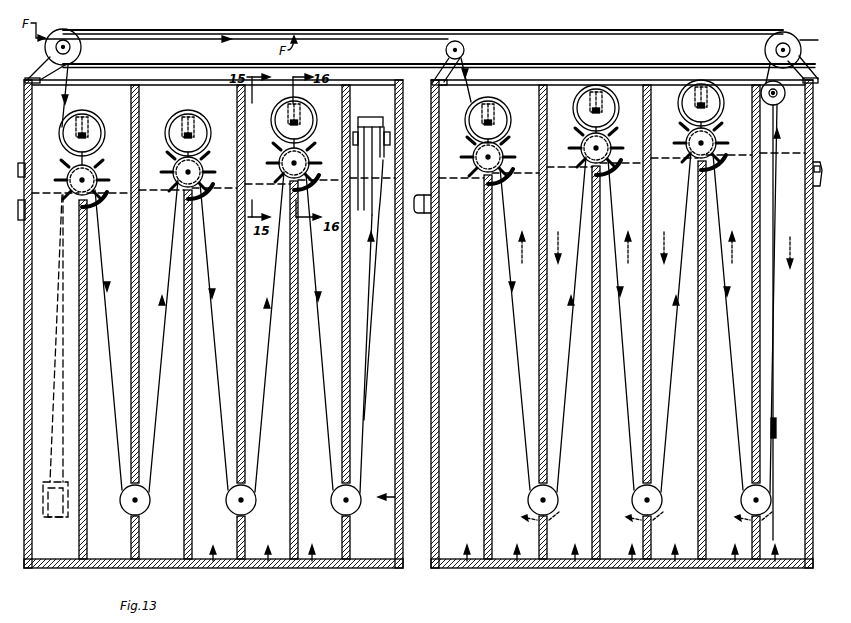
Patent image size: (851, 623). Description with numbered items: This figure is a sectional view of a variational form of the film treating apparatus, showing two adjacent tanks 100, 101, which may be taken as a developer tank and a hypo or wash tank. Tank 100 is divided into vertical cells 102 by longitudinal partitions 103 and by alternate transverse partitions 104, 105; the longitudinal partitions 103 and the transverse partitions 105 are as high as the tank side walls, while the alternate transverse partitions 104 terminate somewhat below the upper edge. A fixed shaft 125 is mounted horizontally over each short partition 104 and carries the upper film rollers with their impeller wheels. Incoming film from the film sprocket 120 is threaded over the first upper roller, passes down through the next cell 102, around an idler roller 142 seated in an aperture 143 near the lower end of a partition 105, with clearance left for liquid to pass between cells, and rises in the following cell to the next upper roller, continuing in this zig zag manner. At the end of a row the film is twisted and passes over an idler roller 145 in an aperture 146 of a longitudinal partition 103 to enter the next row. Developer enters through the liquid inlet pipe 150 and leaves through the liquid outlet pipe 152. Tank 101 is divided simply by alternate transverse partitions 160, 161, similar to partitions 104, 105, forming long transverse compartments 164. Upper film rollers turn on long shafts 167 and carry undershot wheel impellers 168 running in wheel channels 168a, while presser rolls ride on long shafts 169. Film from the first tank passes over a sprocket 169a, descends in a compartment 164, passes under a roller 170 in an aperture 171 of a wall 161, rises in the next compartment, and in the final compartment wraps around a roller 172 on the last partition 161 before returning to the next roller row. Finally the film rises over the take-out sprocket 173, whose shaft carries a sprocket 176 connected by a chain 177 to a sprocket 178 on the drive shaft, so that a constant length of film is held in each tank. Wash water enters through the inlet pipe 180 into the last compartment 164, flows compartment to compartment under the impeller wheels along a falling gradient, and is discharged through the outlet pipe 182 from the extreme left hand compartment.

The tank 100 is at (97, 571).
The tank 101 is at (542, 578).
The vertical cell 102 is at (268, 563).
The longitudinal partition 103 is at (311, 557).
The transverse partition 104 is at (87, 452).
The transverse partition 105 is at (77, 30).
The film sprocket 120 is at (78, 36).
The fixed shaft 125 is at (185, 173).
The idler roller 142 is at (146, 509).
The aperture 143 is at (139, 532).
The idler roller 145 is at (384, 127).
The aperture 146 is at (380, 215).
The liquid inlet pipe 150 is at (28, 170).
The liquid outlet pipe 152 is at (30, 204).
The transverse partition 160 is at (484, 420).
The transverse partition 161 is at (539, 425).
The transverse compartment 164 is at (467, 565).
The shaft 167 is at (484, 188).
The undershot wheel impeller 168 is at (512, 145).
The wheel channel 168a is at (616, 170).
The shaft 169 is at (494, 126).
The sprocket 169a is at (465, 50).
The roller 170 is at (556, 504).
The aperture 171 is at (549, 527).
The roller 172 is at (762, 100).
The take-out sprocket 173 is at (766, 50).
The sprocket 176 is at (790, 22).
The chain 177 is at (411, 32).
The sprocket 178 is at (82, 52).
The inlet pipe 180 is at (812, 168).
The outlet pipe 182 is at (420, 192).